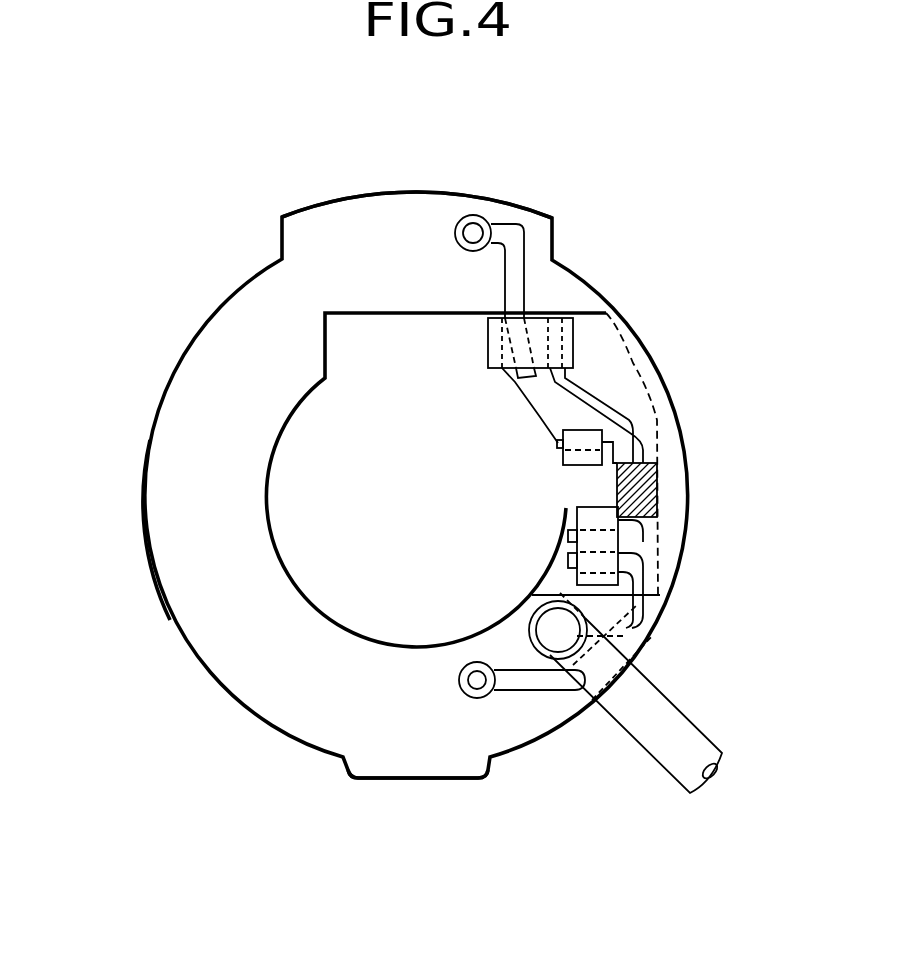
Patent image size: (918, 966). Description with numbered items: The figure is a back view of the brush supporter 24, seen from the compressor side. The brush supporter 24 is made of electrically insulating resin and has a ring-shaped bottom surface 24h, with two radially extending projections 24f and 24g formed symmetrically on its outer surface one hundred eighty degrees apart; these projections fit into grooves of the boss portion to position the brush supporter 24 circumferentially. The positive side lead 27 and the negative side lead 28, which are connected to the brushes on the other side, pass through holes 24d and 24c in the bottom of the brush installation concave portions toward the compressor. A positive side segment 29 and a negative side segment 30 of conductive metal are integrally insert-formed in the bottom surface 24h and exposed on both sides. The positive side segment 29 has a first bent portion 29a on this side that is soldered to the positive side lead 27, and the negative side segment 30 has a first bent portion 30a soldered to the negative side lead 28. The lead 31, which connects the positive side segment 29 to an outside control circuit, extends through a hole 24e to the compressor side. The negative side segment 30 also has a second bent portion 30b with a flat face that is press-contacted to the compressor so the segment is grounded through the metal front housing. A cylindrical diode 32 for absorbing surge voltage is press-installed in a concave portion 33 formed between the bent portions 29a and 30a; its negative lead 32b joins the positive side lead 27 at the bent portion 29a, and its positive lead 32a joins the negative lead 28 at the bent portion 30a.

The brush supporter 24 is at (182, 342).
The hole 24c is at (457, 233).
The hole 24d is at (470, 698).
The hole 24e is at (528, 630).
The projection 24f is at (400, 780).
The projection 24g is at (508, 207).
The bottom surface 24h is at (150, 561).
The positive side lead 27 is at (515, 682).
The negative side lead 28 is at (521, 286).
The positive side segment 29 is at (680, 597).
The first bent portion 29a is at (632, 548).
The negative side segment 30 is at (636, 334).
The first bent portion 30a is at (546, 327).
The second bent portion 30b is at (580, 438).
The lead 31 is at (633, 720).
The diode 32 is at (658, 482).
The positive lead 32a is at (595, 403).
The negative lead 32b is at (630, 533).
The concave portion 33 is at (658, 495).